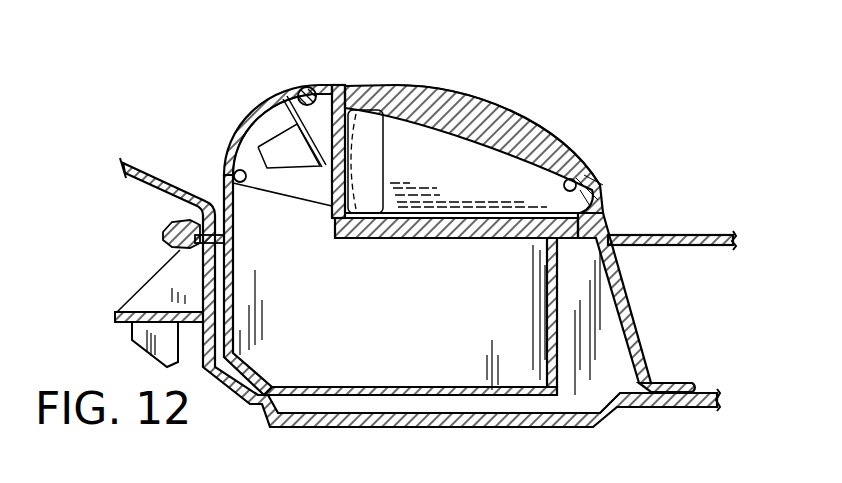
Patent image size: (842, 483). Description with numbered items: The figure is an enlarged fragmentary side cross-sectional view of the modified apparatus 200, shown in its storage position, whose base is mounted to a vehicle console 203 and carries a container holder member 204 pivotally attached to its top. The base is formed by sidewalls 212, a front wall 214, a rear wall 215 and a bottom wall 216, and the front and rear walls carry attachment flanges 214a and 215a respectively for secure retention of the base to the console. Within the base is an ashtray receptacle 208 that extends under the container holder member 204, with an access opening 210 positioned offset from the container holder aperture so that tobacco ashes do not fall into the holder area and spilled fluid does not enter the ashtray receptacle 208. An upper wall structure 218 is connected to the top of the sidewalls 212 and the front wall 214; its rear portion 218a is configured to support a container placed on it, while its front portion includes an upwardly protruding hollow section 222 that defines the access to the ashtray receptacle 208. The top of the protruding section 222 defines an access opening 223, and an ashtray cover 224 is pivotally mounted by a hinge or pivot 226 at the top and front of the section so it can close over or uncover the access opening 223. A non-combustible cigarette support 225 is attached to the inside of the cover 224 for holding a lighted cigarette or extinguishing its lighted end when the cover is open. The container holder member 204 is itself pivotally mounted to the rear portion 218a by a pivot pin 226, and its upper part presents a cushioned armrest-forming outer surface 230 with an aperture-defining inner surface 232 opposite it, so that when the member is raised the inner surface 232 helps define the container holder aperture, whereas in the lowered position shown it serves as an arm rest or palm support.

The modified apparatus 200 is at (678, 107).
The console 203 is at (693, 225).
The container holder member 204 is at (537, 107).
The ashtray receptacle 208 is at (400, 335).
The access opening 210 is at (282, 188).
The sidewalls 212 is at (600, 302).
The front wall 214 is at (230, 340).
The attachment flange 214a is at (167, 243).
The rear wall 215 is at (637, 333).
The attachment flange 215a is at (690, 383).
The bottom wall 216 is at (387, 393).
The upper wall structure 218 is at (346, 80).
The rear portion 218a is at (443, 240).
The upwardly protruding hollow section 222 is at (223, 172).
The access opening 223 is at (258, 147).
The ashtray cover 224 is at (276, 80).
The non-combustible cigarette support 225 is at (233, 147).
The pivot 226 is at (234, 176).
The outer surface 230 is at (457, 187).
The inner surface 232 is at (462, 194).